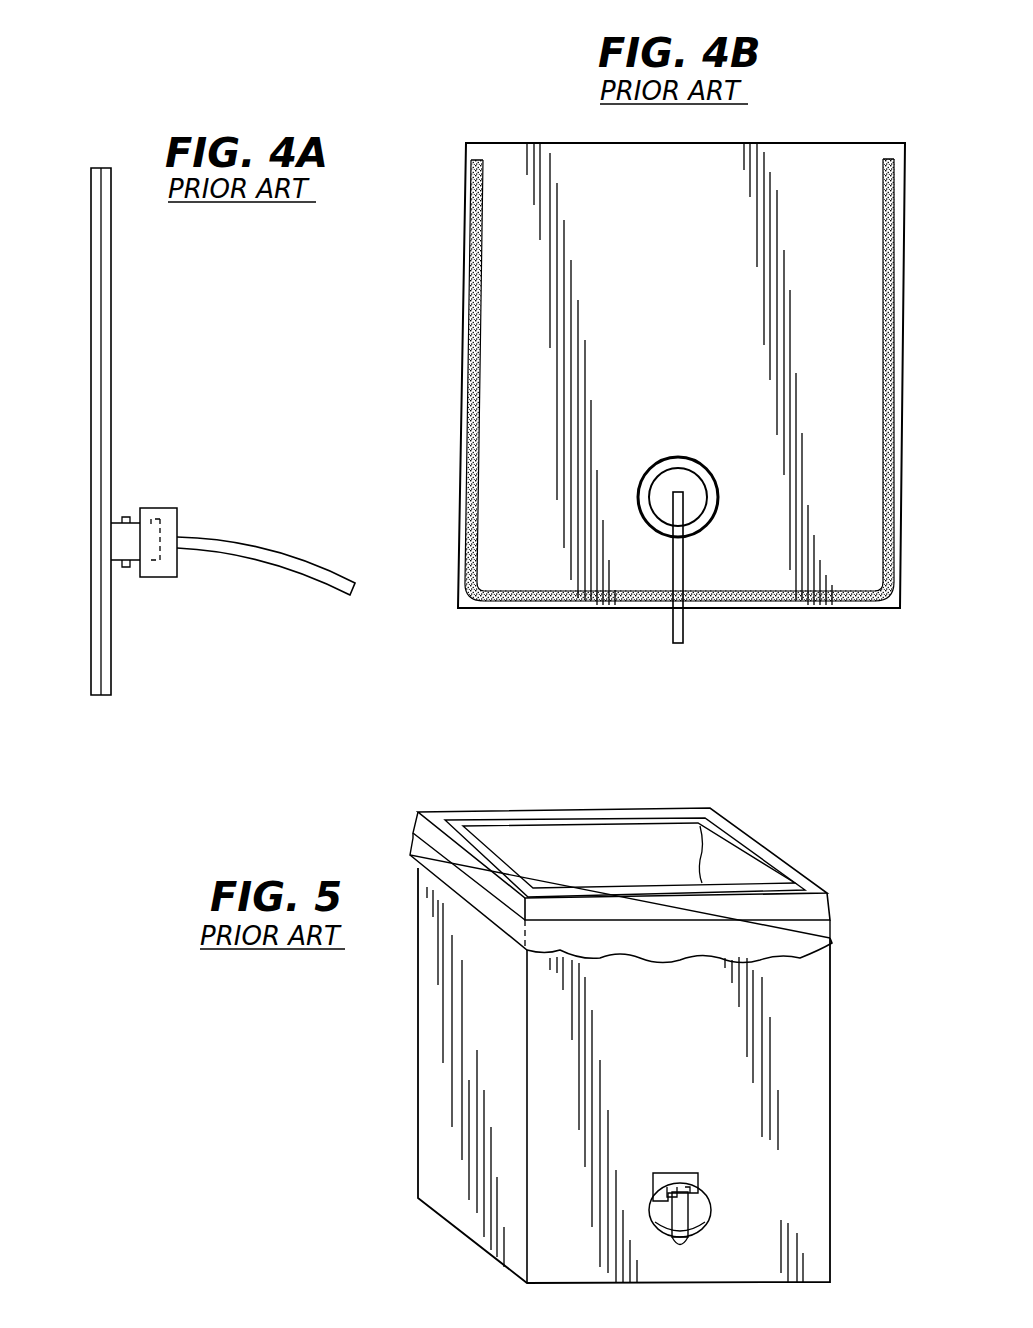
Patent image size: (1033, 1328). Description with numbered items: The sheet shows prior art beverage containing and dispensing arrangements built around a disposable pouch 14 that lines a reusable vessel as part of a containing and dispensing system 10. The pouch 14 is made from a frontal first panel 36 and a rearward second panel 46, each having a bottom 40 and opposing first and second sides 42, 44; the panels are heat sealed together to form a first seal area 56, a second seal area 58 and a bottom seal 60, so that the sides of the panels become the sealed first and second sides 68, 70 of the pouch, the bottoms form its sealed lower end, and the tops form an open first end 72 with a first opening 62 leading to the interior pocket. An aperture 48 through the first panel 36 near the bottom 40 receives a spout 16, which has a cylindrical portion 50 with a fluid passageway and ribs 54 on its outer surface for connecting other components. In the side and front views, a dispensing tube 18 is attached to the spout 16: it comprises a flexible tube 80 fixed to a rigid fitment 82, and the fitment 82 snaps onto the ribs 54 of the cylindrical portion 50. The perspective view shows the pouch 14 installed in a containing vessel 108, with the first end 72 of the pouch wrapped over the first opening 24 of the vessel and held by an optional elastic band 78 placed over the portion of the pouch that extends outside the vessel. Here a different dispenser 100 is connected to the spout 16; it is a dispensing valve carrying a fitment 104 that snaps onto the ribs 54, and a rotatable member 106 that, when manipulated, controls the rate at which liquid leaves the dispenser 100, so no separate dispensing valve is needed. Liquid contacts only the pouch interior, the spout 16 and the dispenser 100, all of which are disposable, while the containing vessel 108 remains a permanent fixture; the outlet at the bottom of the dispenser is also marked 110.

In FIG. 5, the containing and dispensing system 10 is at (658, 1018).
In FIG. 4A, the pouch 14 is at (135, 431).
In FIG. 4B, the pouch 14 is at (672, 372).
In FIG. 5, the pouch 14 is at (662, 1075).
In FIG. 4A, the spout 16 is at (115, 521).
In FIG. 4B, the spout 16 is at (668, 476).
In FIG. 4A, the dispensing tube 18 is at (236, 543).
In FIG. 4B, the dispensing tube 18 is at (725, 529).
In FIG. 5, the first opening 24 is at (758, 866).
In FIG. 4A, the first panel 36 is at (111, 309).
In FIG. 4B, the bottom 40 is at (679, 409).
In FIG. 4B, the first side 42 is at (683, 409).
In FIG. 4B, the second side 44 is at (713, 409).
In FIG. 4A, the second panel 46 is at (91, 292).
In FIG. 4A, the aperture 48 is at (112, 563).
In FIG. 4A, the cylindrical portion 50 is at (173, 540).
In FIG. 4A, the ribs 54 is at (150, 578).
In FIG. 4B, the first seal area 56 is at (672, 409).
In FIG. 4B, the second seal area 58 is at (672, 409).
In FIG. 4B, the bottom seal 60 is at (610, 608).
In FIG. 5, the first opening 62 is at (653, 849).
In FIG. 4B, the first side 68 is at (672, 409).
In FIG. 4B, the second side 70 is at (672, 409).
In FIG. 4B, the first end 72 is at (790, 143).
In FIG. 5, the first end 72 is at (832, 942).
In FIG. 5, the elastic band 78 is at (830, 920).
In FIG. 4A, the tube 80 is at (333, 569).
In FIG. 4B, the tube 80 is at (683, 575).
In FIG. 4A, the fitment 82 is at (177, 578).
In FIG. 4B, the fitment 82 is at (660, 468).
In FIG. 5, the dispenser 100 is at (720, 1203).
In FIG. 5, the fitment 104 is at (710, 1198).
In FIG. 5, the rotatable member 106 is at (665, 1180).
In FIG. 5, the containing vessel 108 is at (830, 1083).
In FIG. 5, the spigot outlet 110 is at (690, 1240).